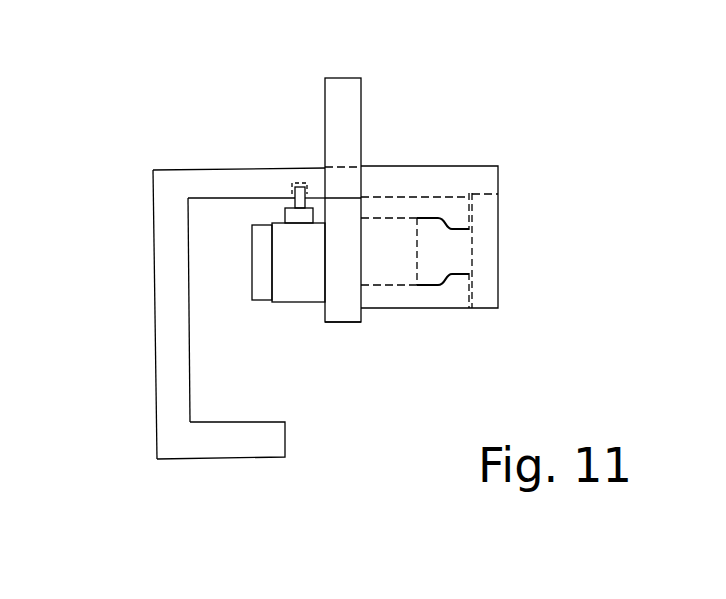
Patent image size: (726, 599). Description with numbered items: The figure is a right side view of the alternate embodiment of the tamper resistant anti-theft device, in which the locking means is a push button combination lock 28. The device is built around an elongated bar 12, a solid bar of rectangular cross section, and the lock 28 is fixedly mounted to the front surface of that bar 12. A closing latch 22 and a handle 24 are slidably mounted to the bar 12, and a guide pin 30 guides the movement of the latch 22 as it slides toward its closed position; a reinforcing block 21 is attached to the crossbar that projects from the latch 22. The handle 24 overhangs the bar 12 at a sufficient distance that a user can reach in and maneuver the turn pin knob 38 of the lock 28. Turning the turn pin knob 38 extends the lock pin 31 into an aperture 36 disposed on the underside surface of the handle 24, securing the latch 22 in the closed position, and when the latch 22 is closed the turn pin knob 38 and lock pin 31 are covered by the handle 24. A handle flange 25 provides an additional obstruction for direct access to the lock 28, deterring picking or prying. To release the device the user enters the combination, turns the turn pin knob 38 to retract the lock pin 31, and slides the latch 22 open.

The elongated bar 12 is at (353, 322).
The reinforcing block 21 is at (360, 97).
The closing latch 22 is at (480, 165).
The handle 24 is at (157, 403).
The handle flange 25 is at (265, 458).
The lock 28 is at (305, 302).
The guide pin 30 is at (467, 250).
The lock pin 31 is at (288, 202).
The aperture 36 is at (307, 187).
The turn pin knob 38 is at (255, 302).